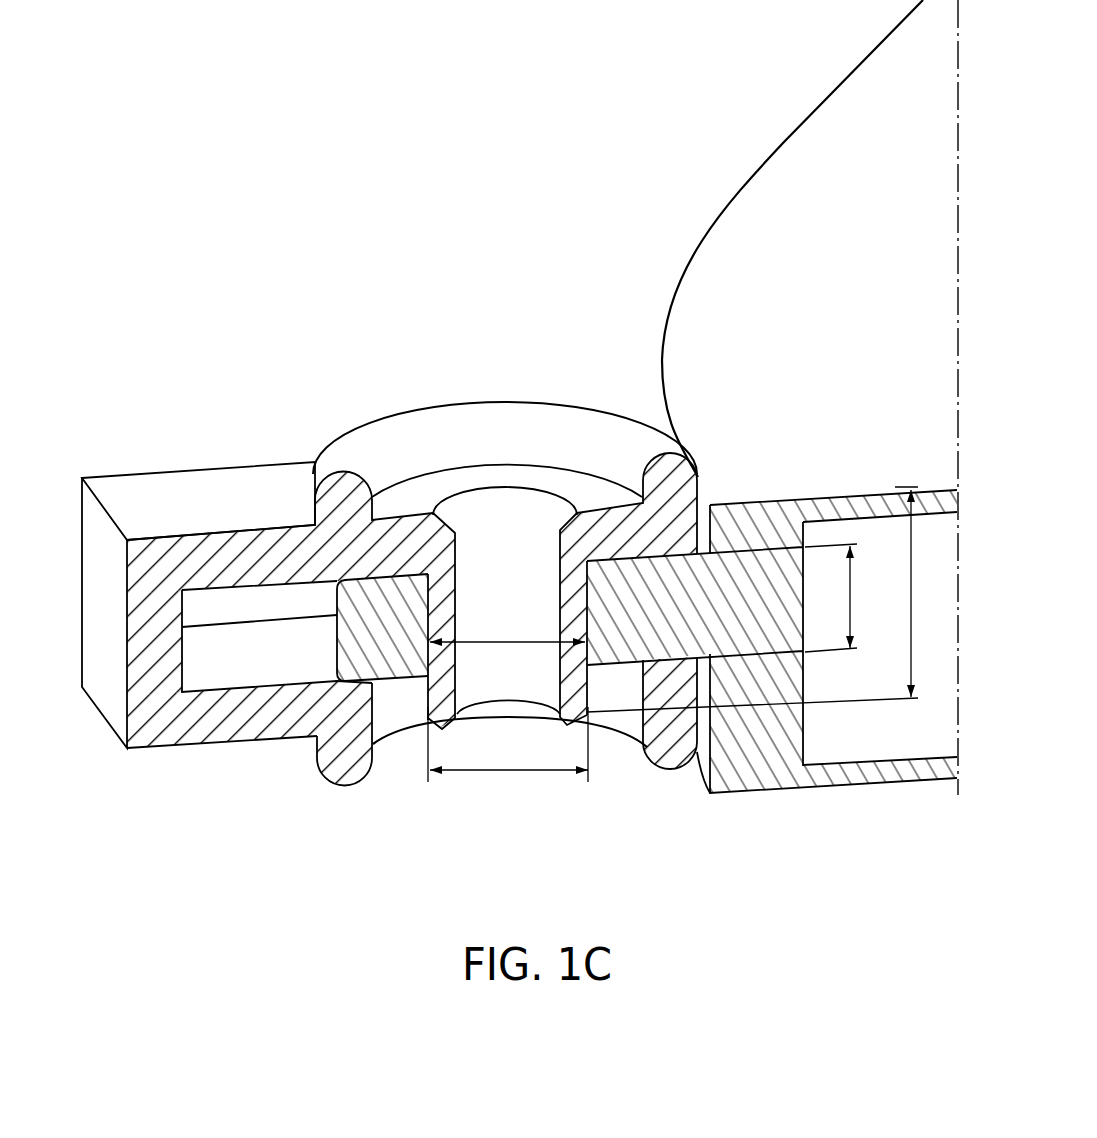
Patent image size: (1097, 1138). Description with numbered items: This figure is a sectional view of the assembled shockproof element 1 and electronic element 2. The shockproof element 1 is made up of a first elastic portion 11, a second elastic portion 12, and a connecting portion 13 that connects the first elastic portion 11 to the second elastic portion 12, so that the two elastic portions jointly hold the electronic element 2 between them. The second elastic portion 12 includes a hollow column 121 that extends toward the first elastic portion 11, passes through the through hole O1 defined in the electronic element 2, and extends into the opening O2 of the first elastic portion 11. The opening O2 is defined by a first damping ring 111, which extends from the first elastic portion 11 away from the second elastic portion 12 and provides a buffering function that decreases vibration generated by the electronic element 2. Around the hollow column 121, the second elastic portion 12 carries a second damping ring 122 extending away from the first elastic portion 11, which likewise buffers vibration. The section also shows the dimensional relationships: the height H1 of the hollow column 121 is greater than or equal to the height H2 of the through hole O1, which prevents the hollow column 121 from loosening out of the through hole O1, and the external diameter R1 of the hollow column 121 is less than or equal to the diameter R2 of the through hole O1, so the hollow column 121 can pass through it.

The shockproof element 1 is at (377, 584).
The electronic element 2 is at (773, 132).
The first elastic portion 11 is at (248, 725).
The second elastic portion 12 is at (240, 563).
The connecting portion 13 is at (158, 637).
The first damping ring 111 is at (348, 763).
The hollow column 121 is at (570, 593).
The second damping ring 122 is at (472, 437).
The through hole O1 is at (418, 572).
The opening O2 is at (393, 716).
The external diameter of the hollow column R1 is at (507, 629).
The diameter of the through hole R2 is at (508, 744).
The height of the hollow column H1 is at (755, 599).
The height of the through hole H2 is at (834, 598).